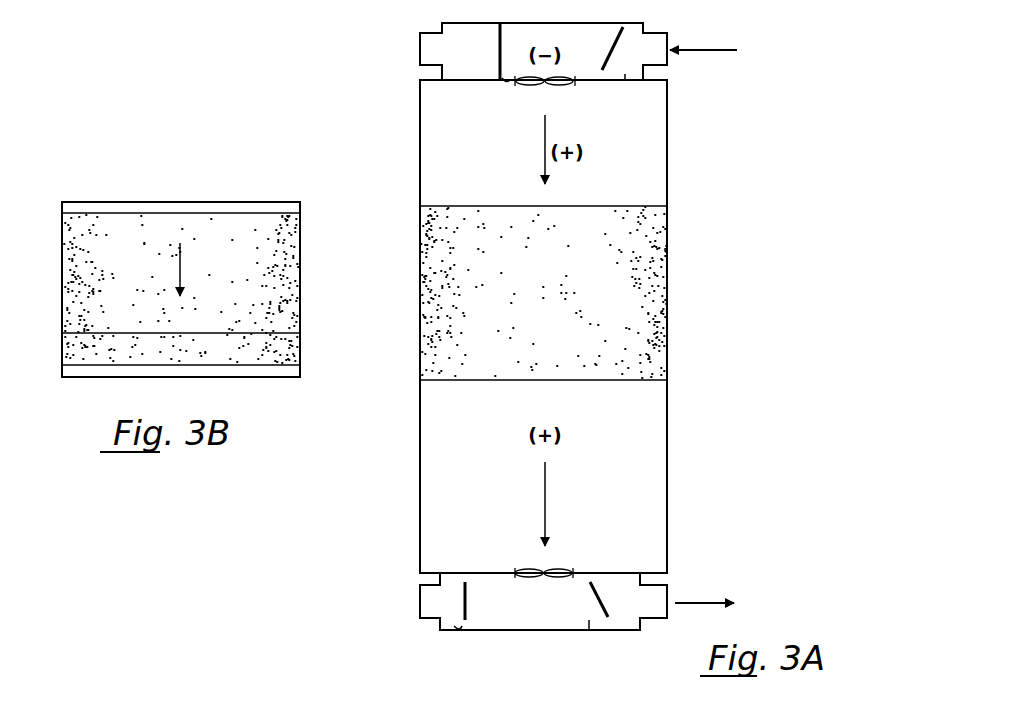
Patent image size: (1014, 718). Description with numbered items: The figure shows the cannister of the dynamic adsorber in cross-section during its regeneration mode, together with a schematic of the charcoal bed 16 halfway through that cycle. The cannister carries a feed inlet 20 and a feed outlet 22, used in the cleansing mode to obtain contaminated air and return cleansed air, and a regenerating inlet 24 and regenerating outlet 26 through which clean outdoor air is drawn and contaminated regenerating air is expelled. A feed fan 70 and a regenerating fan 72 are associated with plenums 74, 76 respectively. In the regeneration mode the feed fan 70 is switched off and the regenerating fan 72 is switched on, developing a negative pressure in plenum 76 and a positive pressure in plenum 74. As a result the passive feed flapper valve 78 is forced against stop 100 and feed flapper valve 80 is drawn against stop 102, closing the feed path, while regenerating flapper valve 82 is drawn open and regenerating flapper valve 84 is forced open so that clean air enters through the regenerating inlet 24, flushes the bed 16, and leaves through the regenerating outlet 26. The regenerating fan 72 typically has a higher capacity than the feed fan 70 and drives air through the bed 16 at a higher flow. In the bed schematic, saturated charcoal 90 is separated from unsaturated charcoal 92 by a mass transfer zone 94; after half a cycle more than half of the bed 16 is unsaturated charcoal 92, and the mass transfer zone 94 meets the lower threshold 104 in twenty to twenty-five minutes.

In FIG. 3A, the adsorption bed 16 is at (645, 307).
In FIG. 3B, the adsorption bed 16 is at (306, 250).
In FIG. 3A, the feed inlet 20 is at (418, 597).
In FIG. 3A, the feed outlet 22 is at (421, 46).
In FIG. 3A, the regenerating inlet 24 is at (665, 44).
In FIG. 3A, the regenerating outlet 26 is at (665, 600).
In FIG. 3A, the feed fan 70 is at (553, 571).
In FIG. 3A, the regenerating fan 72 is at (560, 86).
In FIG. 3A, the plenum 74 is at (540, 620).
In FIG. 3A, the plenum 76 is at (580, 40).
In FIG. 3A, the feed flapper valve 78 is at (464, 600).
In FIG. 3A, the feed flapper valve 80 is at (498, 44).
In FIG. 3A, the regenerating flapper valve 82 is at (612, 50).
In FIG. 3A, the regenerating flapper valve 84 is at (605, 600).
In FIG. 3B, the saturated charcoal 90 is at (270, 351).
In FIG. 3B, the unsaturated charcoal 92 is at (97, 249).
In FIG. 3B, the mass transfer zone 94 is at (265, 335).
In FIG. 3A, the stop 100 is at (456, 628).
In FIG. 3A, the stop 102 is at (506, 82).
In FIG. 3B, the lower threshold 104 is at (130, 364).